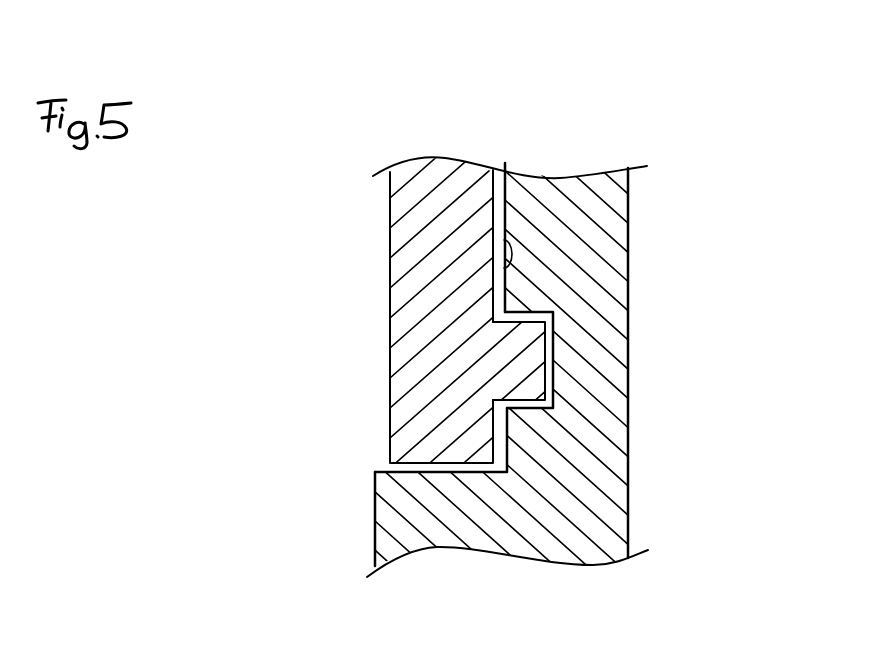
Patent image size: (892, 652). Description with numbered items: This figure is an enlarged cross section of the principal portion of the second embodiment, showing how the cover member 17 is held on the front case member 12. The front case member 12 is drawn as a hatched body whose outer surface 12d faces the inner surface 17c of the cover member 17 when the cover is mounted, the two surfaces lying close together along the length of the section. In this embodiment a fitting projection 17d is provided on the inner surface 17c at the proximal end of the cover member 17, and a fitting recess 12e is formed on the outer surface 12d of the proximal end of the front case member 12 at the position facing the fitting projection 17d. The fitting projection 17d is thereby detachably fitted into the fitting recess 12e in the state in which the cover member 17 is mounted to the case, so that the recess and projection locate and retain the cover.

The front case member 12 is at (628, 222).
The outer surface 12d is at (497, 202).
The fitting recess 12e is at (538, 376).
The cover member 17 is at (390, 218).
The inner surface 17c is at (493, 263).
The fitting projection 17d is at (533, 355).